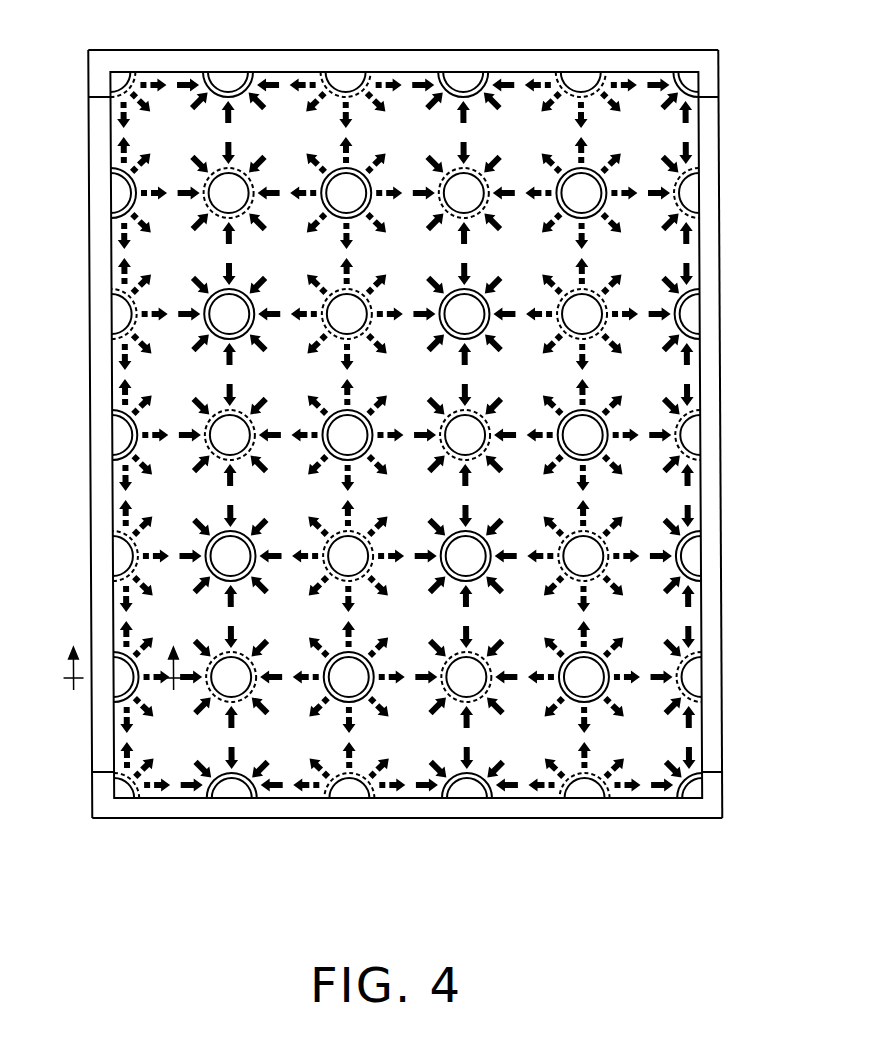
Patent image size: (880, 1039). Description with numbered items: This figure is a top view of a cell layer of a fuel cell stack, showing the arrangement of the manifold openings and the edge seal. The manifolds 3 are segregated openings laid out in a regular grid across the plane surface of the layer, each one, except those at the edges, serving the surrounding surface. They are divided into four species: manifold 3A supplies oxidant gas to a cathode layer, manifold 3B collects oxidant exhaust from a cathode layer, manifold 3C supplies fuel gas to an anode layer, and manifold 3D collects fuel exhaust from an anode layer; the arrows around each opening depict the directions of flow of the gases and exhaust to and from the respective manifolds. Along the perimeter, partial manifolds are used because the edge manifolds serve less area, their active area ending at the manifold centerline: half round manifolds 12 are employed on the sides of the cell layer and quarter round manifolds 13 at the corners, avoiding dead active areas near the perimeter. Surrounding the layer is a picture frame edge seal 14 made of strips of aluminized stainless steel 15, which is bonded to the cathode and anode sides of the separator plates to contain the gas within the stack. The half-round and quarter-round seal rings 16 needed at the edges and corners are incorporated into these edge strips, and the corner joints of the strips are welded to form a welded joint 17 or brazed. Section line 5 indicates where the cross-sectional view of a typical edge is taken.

The manifold 3 is at (475, 676).
The oxidant supply manifold 3A is at (592, 435).
The oxidant exhaust manifold 3B is at (475, 555).
The fuel supply manifold 3C is at (595, 555).
The fuel exhaust manifold 3D is at (473, 434).
The section line 5 is at (123, 682).
The half round manifold 12 is at (692, 195).
The quarter round manifold 13 is at (690, 78).
The picture frame edge seal 14 is at (707, 248).
The strips of aluminized stainless steel 15 is at (397, 51).
The half-round and quarter-round seal rings 16 is at (683, 322).
The welded joint 17 is at (712, 90).